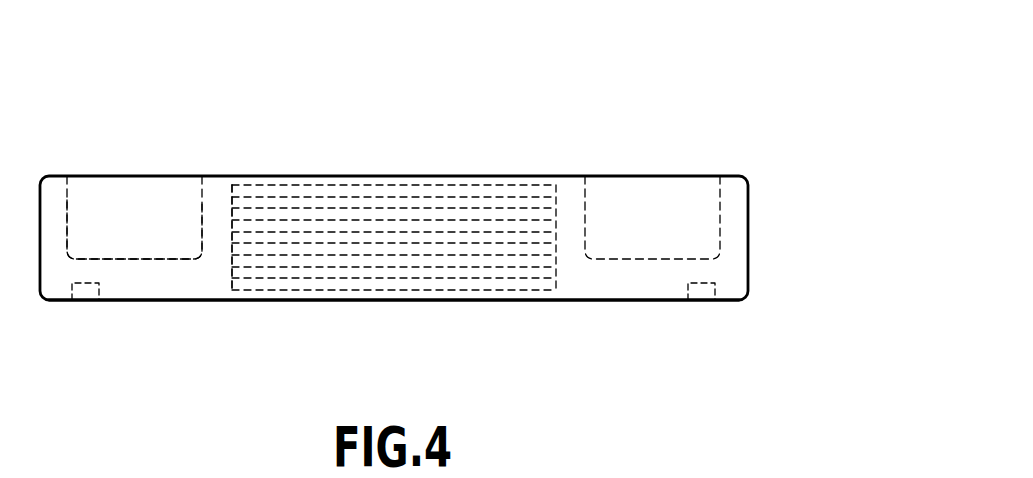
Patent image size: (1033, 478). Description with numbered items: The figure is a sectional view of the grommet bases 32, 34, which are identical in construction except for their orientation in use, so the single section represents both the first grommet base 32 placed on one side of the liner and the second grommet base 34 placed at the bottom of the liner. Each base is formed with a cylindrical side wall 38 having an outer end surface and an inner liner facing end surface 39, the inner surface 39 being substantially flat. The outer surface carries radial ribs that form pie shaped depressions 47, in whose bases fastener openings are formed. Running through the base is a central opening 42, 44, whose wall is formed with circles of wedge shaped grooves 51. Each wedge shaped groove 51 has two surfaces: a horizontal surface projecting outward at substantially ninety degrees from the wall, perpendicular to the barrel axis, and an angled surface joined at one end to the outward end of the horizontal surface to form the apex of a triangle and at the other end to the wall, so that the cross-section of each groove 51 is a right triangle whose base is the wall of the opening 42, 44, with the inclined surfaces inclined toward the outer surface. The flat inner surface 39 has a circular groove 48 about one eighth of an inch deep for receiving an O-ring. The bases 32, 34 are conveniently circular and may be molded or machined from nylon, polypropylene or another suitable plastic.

The first grommet base 32 is at (394, 164).
The second grommet base 34 is at (577, 98).
The cylindrical side wall 38 is at (218, 176).
The inner liner facing end surface 39 is at (145, 300).
The central opening 42 is at (394, 190).
The central opening 44 is at (387, 157).
The pie shaped depressions 47 is at (121, 202).
The circular groove 48 is at (702, 292).
The wedge shaped grooves 51 is at (232, 283).